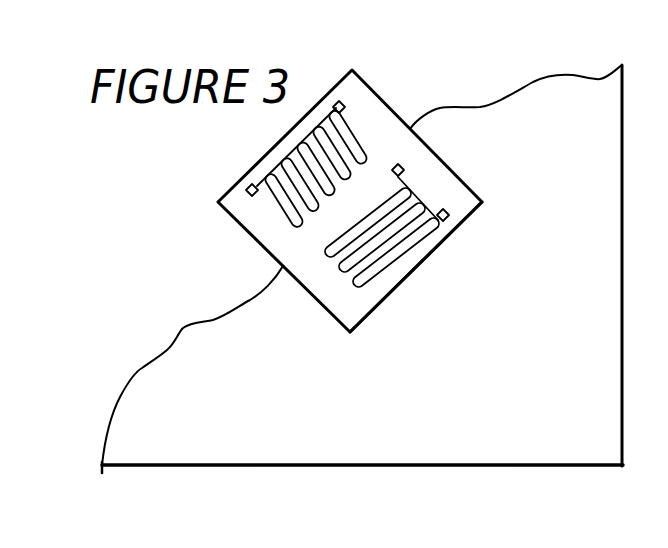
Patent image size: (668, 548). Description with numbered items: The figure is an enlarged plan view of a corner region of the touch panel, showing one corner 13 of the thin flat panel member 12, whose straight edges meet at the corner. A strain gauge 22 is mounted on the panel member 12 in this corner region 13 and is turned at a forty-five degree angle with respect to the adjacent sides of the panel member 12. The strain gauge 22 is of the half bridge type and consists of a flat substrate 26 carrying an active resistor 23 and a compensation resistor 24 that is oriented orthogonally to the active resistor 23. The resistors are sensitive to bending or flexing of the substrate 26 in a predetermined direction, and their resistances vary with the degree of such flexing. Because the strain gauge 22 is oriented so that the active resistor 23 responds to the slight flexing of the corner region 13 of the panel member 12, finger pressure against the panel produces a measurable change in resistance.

The panel member 12 is at (572, 258).
The corner 13 is at (520, 470).
The strain gauge 22 is at (458, 176).
The active resistor 23 is at (358, 134).
The compensation resistor 24 is at (407, 247).
The substrate 26 is at (380, 307).